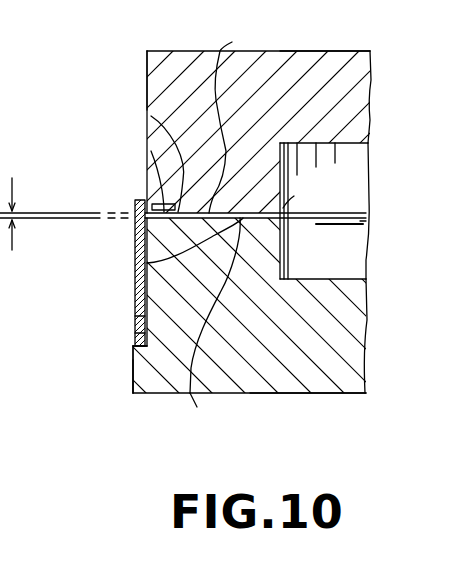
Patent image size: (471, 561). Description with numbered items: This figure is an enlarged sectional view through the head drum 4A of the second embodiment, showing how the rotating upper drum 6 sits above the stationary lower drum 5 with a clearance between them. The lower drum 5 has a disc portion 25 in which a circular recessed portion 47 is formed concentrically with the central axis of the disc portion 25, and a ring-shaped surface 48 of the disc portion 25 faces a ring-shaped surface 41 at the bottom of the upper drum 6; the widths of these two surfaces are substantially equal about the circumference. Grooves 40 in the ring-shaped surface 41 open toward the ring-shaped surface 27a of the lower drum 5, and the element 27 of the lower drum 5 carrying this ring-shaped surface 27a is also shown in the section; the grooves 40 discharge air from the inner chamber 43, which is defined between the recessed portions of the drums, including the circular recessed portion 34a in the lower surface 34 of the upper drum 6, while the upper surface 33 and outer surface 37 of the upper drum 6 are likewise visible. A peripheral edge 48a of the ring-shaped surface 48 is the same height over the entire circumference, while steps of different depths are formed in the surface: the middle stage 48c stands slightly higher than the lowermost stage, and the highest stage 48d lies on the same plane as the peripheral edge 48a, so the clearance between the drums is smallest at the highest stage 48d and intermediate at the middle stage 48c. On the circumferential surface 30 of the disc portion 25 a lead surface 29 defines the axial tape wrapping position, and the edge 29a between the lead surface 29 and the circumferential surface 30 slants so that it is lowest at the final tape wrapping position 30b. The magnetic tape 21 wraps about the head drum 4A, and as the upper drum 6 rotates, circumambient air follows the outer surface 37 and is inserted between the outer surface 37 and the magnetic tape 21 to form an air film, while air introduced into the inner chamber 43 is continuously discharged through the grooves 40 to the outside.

The lower drum 5 is at (364, 325).
The upper drum 6 is at (370, 93).
The magnetic tape 21 is at (135, 242).
The disc portion 25 is at (320, 393).
The optical fiber 27 is at (348, 213).
The ring-shaped surface 27a is at (314, 190).
The lead surface 29 is at (135, 316).
The edge 29a is at (136, 333).
The circumferential surface 30 is at (133, 372).
The final tape wrapping position 30b is at (133, 353).
The upper surface 33 is at (352, 51).
The lower surface 34 is at (136, 263).
The circular recessed portion 34a is at (365, 150).
The outer surface 37 is at (147, 67).
The grooves 40 is at (151, 151).
The ring-shaped surface 41 is at (196, 414).
The inner chamber 43 is at (346, 271).
The circular recessed portion 47 is at (334, 224).
The ring-shaped surface 48 is at (151, 116).
The peripheral edge 48a is at (149, 204).
The middle stage 48c is at (370, 225).
The highest stage 48d is at (226, 204).
The head drum 4A is at (110, 398).